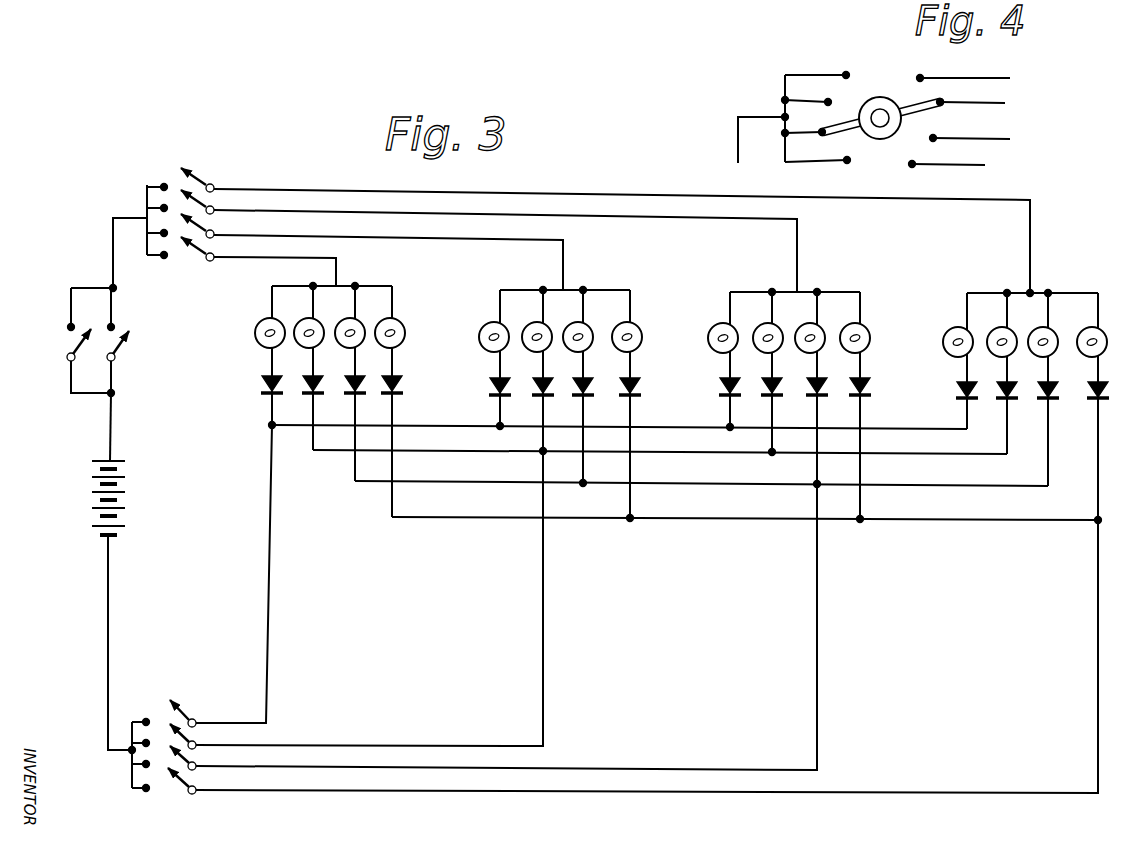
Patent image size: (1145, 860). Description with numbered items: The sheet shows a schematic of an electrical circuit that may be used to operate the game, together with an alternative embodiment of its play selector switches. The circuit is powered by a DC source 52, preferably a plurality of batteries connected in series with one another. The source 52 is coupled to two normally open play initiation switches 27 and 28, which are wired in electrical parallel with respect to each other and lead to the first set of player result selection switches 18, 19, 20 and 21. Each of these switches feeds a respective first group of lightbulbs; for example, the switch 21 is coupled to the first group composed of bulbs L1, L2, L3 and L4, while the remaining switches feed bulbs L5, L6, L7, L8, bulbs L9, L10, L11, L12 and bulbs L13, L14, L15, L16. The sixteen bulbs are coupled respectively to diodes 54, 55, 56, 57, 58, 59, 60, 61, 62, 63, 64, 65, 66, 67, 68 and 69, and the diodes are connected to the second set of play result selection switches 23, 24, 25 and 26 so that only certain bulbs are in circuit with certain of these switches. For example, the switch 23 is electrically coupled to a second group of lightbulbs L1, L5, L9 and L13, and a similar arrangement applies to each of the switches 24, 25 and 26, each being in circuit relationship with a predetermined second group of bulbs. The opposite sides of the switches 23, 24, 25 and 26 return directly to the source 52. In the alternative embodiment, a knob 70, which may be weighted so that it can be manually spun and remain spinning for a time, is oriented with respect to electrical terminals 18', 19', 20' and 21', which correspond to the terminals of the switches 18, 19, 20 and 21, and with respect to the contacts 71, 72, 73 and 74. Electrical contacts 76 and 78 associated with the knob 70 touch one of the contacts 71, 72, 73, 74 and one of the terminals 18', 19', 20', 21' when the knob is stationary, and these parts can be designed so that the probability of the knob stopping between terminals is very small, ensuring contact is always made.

In FIG. 3, the player result selection switch 18 is at (605, 228).
In FIG. 3, the player result selection switch 19 is at (489, 241).
In FIG. 3, the player result selection switch 20 is at (372, 252).
In FIG. 3, the player result selection switch 21 is at (258, 261).
In FIG. 3, the play result selection switch 23 is at (196, 720).
In FIG. 3, the play result selection switch 24 is at (196, 745).
In FIG. 3, the play result selection switch 25 is at (196, 766).
In FIG. 3, the play result selection switch 26 is at (196, 790).
In FIG. 3, the play initiation switch 27 is at (66, 350).
In FIG. 3, the play initiation switch 28 is at (116, 352).
In FIG. 3, the DC source 52 is at (126, 498).
In FIG. 3, the diode 54 is at (263, 388).
In FIG. 3, the diode 55 is at (304, 388).
In FIG. 3, the diode 56 is at (346, 388).
In FIG. 3, the diode 57 is at (383, 388).
In FIG. 3, the diode 58 is at (491, 390).
In FIG. 3, the diode 59 is at (534, 390).
In FIG. 3, the diode 60 is at (574, 390).
In FIG. 3, the diode 61 is at (621, 390).
In FIG. 3, the diode 62 is at (721, 390).
In FIG. 3, the diode 63 is at (763, 390).
In FIG. 3, the diode 64 is at (808, 390).
In FIG. 3, the diode 65 is at (851, 390).
In FIG. 3, the diode 66 is at (958, 393).
In FIG. 3, the diode 67 is at (998, 393).
In FIG. 3, the diode 68 is at (1039, 393).
In FIG. 3, the diode 69 is at (1089, 393).
In FIG. 4, the knob 70 is at (893, 86).
In FIG. 3, the contact 71 is at (163, 185).
In FIG. 4, the contact 71 is at (862, 64).
In FIG. 3, the contact 72 is at (163, 207).
In FIG. 4, the contact 72 is at (832, 92).
In FIG. 3, the contact 73 is at (163, 233).
In FIG. 4, the contact 73 is at (820, 132).
In FIG. 3, the contact 74 is at (164, 257).
In FIG. 4, the contact 74 is at (848, 163).
In FIG. 4, the electrical contact 76 is at (860, 136).
In FIG. 4, the electrical contact 78 is at (920, 112).
In FIG. 4, the electrical terminal 18' is at (964, 66).
In FIG. 4, the electrical terminal 19' is at (971, 95).
In FIG. 4, the electrical terminal 20' is at (970, 129).
In FIG. 4, the electrical terminal 21' is at (947, 157).
In FIG. 3, the lightbulb L1 is at (256, 326).
In FIG. 3, the lightbulb L2 is at (295, 324).
In FIG. 3, the lightbulb L3 is at (336, 324).
In FIG. 3, the lightbulb L4 is at (376, 324).
In FIG. 3, the lightbulb L5 is at (480, 328).
In FIG. 3, the lightbulb L6 is at (523, 326).
In FIG. 3, the lightbulb L7 is at (564, 326).
In FIG. 3, the lightbulb L8 is at (612, 326).
In FIG. 3, the lightbulb L9 is at (708, 330).
In FIG. 3, the lightbulb L10 is at (754, 328).
In FIG. 3, the lightbulb L11 is at (796, 328).
In FIG. 3, the lightbulb L12 is at (840, 330).
In FIG. 3, the lightbulb L13 is at (944, 334).
In FIG. 3, the lightbulb L14 is at (990, 332).
In FIG. 3, the lightbulb L15 is at (1031, 332).
In FIG. 3, the lightbulb L16 is at (1078, 332).